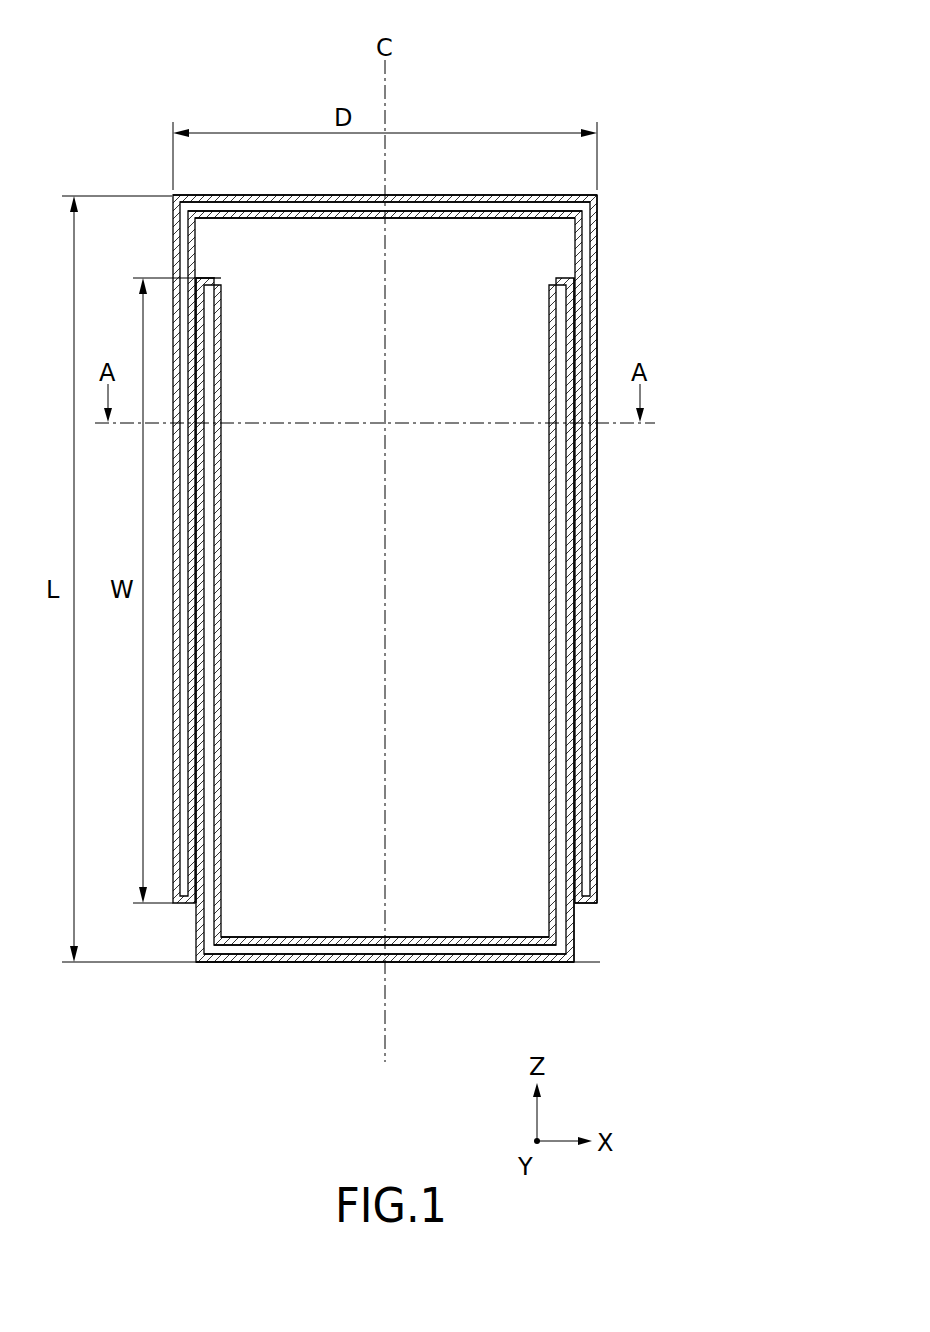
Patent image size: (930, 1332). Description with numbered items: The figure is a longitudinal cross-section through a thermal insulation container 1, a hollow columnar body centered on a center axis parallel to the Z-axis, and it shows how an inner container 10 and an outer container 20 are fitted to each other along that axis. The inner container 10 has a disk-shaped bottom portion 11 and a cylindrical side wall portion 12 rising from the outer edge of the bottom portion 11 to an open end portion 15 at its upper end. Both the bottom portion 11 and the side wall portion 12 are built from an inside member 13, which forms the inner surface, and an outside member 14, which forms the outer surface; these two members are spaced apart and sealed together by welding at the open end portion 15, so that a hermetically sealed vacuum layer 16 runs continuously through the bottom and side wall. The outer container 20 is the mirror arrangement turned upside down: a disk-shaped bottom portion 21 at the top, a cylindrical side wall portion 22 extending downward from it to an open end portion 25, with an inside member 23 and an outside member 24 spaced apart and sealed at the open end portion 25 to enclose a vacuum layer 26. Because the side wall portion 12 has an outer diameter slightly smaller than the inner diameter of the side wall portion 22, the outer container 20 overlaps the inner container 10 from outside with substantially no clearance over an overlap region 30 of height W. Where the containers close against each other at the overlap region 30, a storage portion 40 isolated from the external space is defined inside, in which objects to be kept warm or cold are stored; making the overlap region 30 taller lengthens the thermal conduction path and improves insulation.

The thermal insulation container 1 is at (381, 527).
The inner container 10 is at (600, 986).
The bottom portion 11 is at (574, 970).
The side wall portion 12 is at (539, 278).
The inside member 13 is at (322, 940).
The outside member 14 is at (463, 962).
The open end portion 15 is at (218, 281).
The vacuum layer 16 is at (407, 958).
The outer container 20 is at (141, 175).
The bottom portion 21 is at (597, 190).
The side wall portion 22 is at (604, 221).
The inside member 23 is at (333, 222).
The outside member 24 is at (460, 203).
The open end portion 25 is at (598, 905).
The vacuum layer 26 is at (405, 214).
The overlap region 30 is at (226, 278).
The storage portion 40 is at (363, 590).